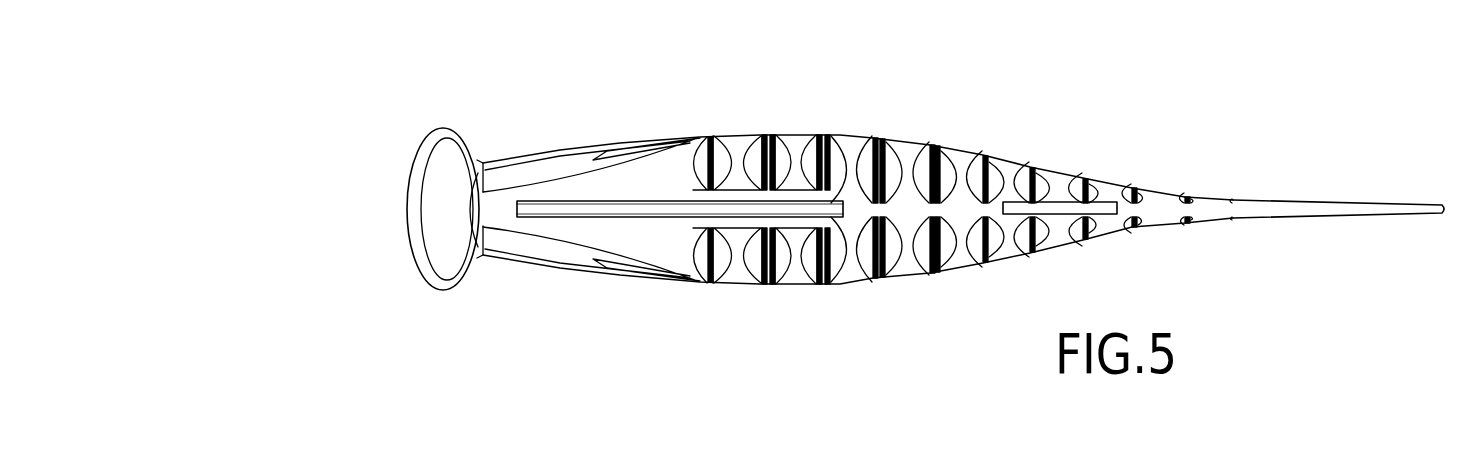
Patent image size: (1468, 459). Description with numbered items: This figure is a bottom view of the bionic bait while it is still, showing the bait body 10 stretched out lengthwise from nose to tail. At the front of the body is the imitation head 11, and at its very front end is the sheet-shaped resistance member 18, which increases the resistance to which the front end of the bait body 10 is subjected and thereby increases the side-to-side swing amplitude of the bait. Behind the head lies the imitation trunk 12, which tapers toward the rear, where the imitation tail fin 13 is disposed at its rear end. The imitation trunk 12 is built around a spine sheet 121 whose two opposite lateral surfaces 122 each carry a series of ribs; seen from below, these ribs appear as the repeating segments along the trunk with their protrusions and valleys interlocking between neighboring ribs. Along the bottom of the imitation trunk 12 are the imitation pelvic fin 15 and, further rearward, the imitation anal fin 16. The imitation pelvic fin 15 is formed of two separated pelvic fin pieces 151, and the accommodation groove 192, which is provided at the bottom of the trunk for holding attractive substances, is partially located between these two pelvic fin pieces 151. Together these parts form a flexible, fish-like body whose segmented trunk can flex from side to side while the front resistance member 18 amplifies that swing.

The bait body 10 is at (1238, 65).
The imitation head 11 is at (528, 152).
The imitation trunk 12 is at (1010, 158).
The imitation tail fin 13 is at (1365, 201).
The imitation pelvic fin 15 is at (770, 156).
The pelvic fin pieces 151 is at (793, 193).
The imitation anal fin 16 is at (1058, 210).
The resistance member 18 is at (421, 170).
The spine sheet 121 is at (972, 208).
The lateral surfaces 122 is at (941, 218).
The accommodation groove 192 is at (585, 208).